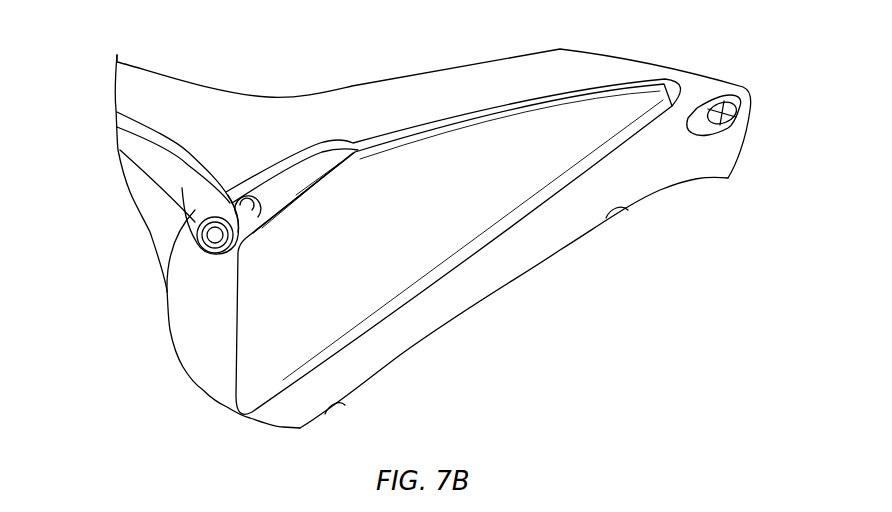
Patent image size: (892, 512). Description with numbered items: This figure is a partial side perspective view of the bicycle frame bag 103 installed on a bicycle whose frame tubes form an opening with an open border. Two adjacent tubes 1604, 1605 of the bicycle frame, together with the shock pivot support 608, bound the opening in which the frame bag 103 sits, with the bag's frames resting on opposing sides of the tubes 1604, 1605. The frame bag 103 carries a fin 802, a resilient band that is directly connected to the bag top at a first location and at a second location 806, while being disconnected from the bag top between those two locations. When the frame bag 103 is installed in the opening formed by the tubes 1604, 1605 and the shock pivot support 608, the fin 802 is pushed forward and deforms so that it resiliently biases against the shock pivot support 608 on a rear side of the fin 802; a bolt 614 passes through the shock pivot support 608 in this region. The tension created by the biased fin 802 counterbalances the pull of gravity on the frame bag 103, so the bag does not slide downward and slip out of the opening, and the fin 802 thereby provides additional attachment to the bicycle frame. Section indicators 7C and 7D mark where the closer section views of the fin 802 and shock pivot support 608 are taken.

The tube 1604 is at (474, 76).
The tube 1605 is at (460, 304).
The bicycle frame bag 103 is at (540, 252).
The fin 802 is at (233, 177).
The second location 806 is at (347, 146).
The shock pivot support 608 is at (204, 207).
The bolt 614 is at (262, 235).
The section line 7C is at (243, 312).
The section line 7D is at (232, 193).